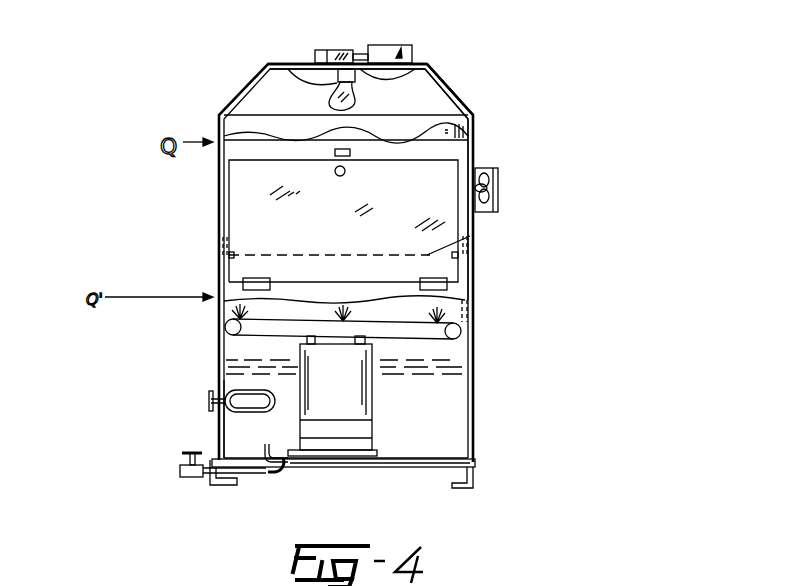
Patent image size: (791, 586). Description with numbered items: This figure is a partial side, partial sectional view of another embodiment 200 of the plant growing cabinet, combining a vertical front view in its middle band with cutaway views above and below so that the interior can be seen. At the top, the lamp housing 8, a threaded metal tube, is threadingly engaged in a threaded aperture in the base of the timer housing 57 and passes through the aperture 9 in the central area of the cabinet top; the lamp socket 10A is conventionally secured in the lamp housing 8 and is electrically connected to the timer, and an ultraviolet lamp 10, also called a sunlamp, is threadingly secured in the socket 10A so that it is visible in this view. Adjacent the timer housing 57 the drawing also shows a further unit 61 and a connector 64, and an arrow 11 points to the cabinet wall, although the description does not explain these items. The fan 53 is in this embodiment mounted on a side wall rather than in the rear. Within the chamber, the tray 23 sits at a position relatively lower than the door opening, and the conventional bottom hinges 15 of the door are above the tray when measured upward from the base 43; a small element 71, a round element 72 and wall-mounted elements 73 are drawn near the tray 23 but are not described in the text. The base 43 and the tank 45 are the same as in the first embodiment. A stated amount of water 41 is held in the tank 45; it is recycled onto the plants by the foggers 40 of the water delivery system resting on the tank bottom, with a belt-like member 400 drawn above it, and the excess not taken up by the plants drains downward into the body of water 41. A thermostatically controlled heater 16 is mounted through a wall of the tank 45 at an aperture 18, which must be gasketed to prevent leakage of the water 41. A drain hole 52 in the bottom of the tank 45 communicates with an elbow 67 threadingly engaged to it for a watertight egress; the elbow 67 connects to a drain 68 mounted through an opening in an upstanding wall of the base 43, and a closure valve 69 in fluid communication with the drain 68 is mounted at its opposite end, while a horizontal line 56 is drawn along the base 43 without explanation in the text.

The embodiment 200 is at (158, 173).
The lamp housing 8 is at (312, 64).
The aperture 9 is at (427, 66).
The ultraviolet lamp 10 is at (356, 100).
The lamp socket 10A is at (300, 68).
The housing 11 is at (487, 142).
The lamp control unit 61 is at (322, 50).
The connector 64 is at (342, 50).
The timer housing 57 is at (413, 45).
The sensor 71 is at (350, 153).
The thermostat 72 is at (343, 176).
The sensor 73 is at (219, 243).
The tray 23 is at (470, 237).
The fan 53 is at (498, 207).
The bottom hinges 15 is at (243, 285).
The conveyor belt 400 is at (223, 310).
The thermostatically controlled heater 16 is at (228, 380).
The aperture 18 is at (220, 379).
The foggers 40 is at (445, 342).
The water 41 is at (447, 358).
The tank 45 is at (466, 437).
The base 43 is at (474, 483).
The drain hole 52 is at (265, 446).
The supply pipe 56 is at (295, 465).
The elbow 67 is at (275, 472).
The drain 68 is at (243, 478).
The closure valve 69 is at (190, 452).